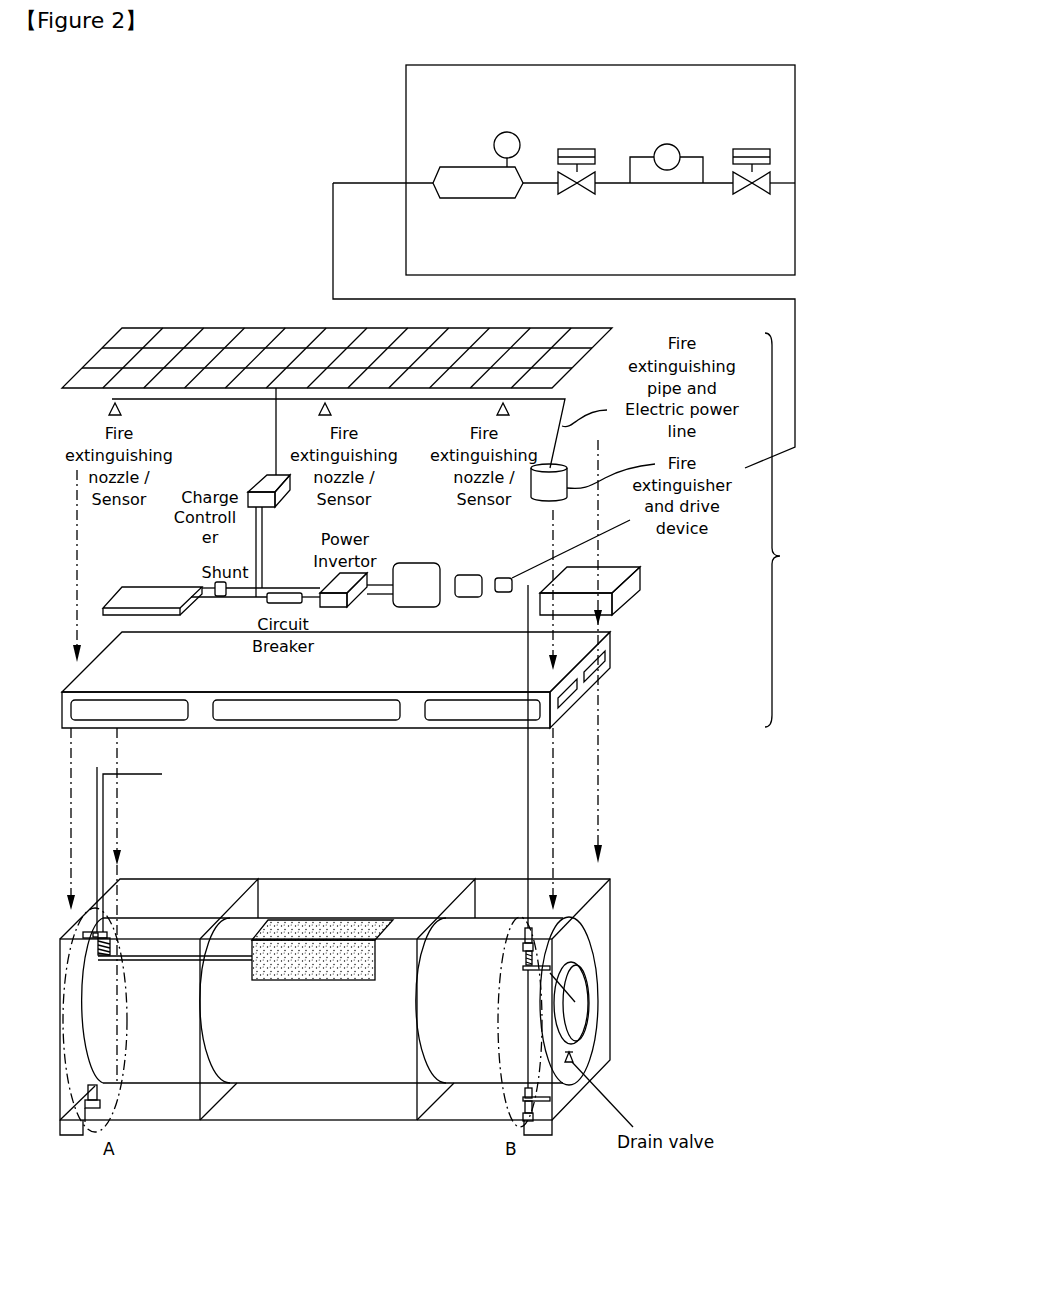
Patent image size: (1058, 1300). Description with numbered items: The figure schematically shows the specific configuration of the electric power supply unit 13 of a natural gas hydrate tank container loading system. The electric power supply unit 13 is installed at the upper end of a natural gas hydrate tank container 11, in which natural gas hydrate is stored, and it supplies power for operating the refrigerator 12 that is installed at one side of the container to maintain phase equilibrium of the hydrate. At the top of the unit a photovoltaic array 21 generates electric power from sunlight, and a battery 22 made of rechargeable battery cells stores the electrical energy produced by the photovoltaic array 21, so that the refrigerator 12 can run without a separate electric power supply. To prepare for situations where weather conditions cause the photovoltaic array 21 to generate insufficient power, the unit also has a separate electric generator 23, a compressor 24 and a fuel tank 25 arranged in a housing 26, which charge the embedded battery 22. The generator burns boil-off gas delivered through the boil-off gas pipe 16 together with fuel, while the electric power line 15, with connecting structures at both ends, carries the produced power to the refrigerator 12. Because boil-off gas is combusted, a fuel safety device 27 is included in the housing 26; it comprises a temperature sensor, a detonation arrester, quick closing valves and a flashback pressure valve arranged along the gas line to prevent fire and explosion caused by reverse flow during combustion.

The natural gas hydrate tank container 11 is at (612, 937).
The refrigerator 12 is at (330, 962).
The electric power supply unit 13 is at (793, 530).
The electric power line 15 is at (87, 825).
The boil-off gas pipe 16 is at (530, 820).
The photovoltaic array 21 is at (208, 345).
The battery 22 is at (127, 597).
The electric generator 23 is at (418, 562).
The compressor 24 is at (470, 575).
The fuel tank 25 is at (625, 591).
The housing 26 is at (610, 662).
The fuel safety device 27 is at (405, 134).